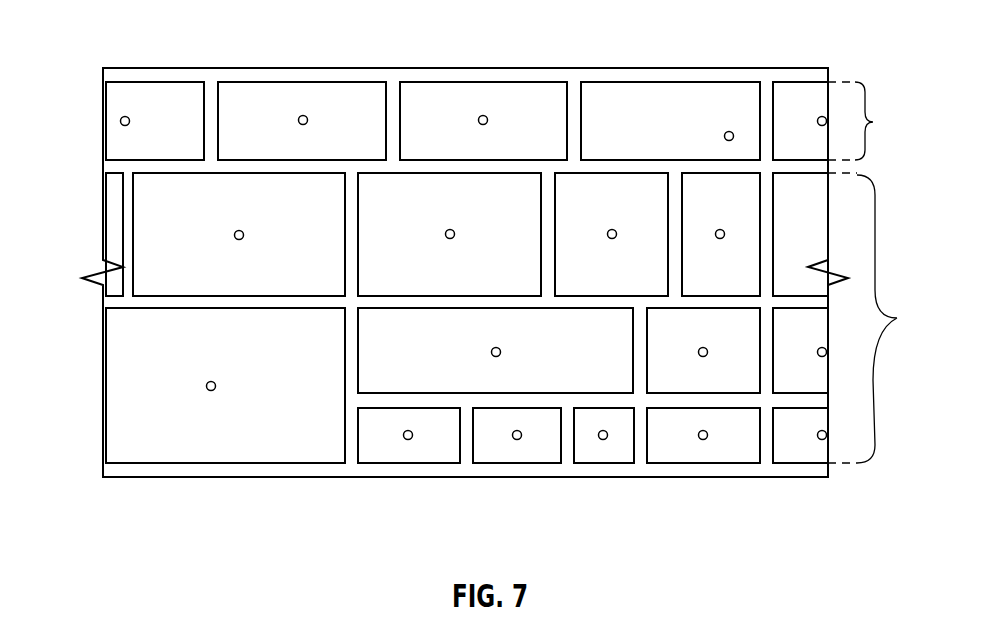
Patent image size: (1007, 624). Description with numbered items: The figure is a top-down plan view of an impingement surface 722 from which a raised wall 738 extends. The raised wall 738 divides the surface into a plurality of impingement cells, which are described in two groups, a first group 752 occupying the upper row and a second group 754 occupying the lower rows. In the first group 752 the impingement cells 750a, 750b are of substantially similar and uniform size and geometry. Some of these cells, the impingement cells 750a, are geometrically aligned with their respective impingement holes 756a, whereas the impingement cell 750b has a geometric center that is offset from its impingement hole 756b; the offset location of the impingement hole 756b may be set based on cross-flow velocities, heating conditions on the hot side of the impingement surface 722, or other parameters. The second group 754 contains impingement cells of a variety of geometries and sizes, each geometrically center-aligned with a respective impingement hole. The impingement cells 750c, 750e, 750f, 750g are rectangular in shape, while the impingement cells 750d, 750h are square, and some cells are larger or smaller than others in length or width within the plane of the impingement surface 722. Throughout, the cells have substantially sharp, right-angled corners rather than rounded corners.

The raised wall 738 is at (212, 75).
The impingement surface 722 is at (118, 99).
The impingement cells 750a is at (262, 95).
The impingement holes 756a is at (303, 115).
The impingement cells 750b is at (638, 95).
The impingement hole 756b is at (730, 131).
The impingement cells 750c is at (274, 285).
The impingement cell 750d is at (604, 285).
The impingement cell 750e is at (257, 458).
The impingement cell 750f is at (420, 458).
The impingement cell 750g is at (524, 390).
The impingement cell 750h is at (615, 458).
The first group 752 is at (873, 122).
The second group 754 is at (897, 318).